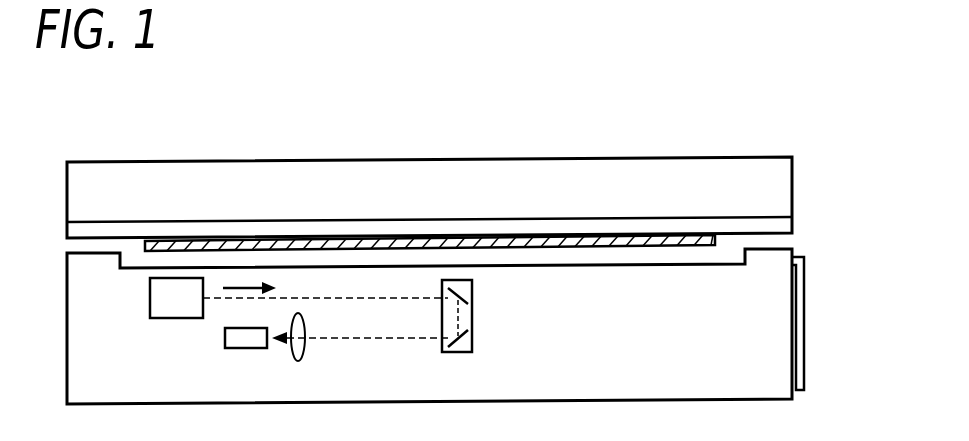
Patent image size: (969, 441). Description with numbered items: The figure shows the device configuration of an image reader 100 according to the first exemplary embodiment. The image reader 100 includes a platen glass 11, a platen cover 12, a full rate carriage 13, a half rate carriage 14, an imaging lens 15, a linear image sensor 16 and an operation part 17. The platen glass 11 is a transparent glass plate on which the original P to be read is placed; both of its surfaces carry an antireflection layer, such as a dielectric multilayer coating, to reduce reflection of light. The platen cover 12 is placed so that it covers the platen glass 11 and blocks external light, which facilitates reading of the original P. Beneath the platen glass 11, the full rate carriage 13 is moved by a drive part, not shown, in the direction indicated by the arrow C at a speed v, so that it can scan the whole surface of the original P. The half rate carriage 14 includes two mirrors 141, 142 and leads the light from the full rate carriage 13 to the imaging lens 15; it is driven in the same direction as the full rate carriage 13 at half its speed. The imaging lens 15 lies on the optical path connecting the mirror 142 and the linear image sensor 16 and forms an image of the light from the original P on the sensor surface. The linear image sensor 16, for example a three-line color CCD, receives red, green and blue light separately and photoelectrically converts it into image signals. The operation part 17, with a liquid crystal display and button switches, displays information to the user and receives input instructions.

The image reader 100 is at (602, 128).
The platen cover 12 is at (422, 160).
The original P is at (606, 258).
The platen glass 11 is at (698, 263).
The operation part 17 is at (804, 262).
The full rate carriage 13 is at (173, 313).
The arrow C is at (259, 285).
The linear image sensor 16 is at (238, 348).
The imaging lens 15 is at (301, 355).
The half rate carriage 14 is at (486, 340).
The mirror 141 is at (472, 297).
The mirror 142 is at (472, 338).